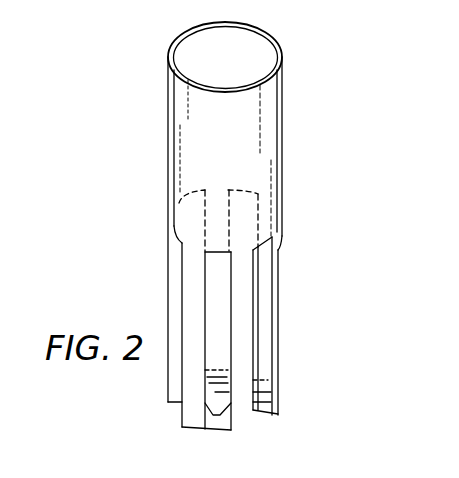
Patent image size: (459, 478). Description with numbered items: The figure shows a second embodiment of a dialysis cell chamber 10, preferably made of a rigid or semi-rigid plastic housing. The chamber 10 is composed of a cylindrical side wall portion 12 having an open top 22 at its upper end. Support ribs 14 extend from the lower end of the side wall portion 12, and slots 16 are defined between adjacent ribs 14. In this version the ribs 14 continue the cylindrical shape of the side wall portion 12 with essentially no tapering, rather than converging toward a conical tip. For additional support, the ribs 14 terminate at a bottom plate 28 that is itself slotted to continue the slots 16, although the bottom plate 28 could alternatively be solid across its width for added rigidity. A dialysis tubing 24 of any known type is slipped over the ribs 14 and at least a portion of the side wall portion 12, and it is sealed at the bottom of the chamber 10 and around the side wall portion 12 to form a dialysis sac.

The chamber 10 is at (158, 248).
The cylindrical side wall portion 12 is at (265, 128).
The support ribs 14 is at (242, 407).
The slots 16 is at (265, 297).
The open top 22 is at (257, 57).
The dialysis tubing 24 is at (283, 243).
The bottom plate 28 is at (205, 401).